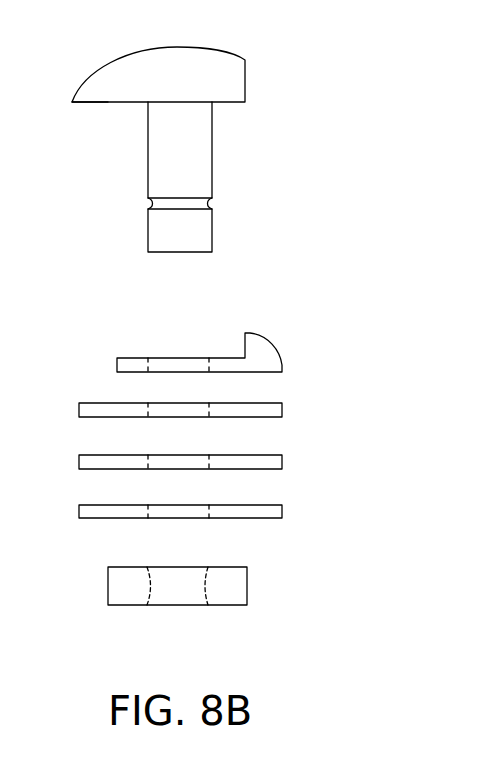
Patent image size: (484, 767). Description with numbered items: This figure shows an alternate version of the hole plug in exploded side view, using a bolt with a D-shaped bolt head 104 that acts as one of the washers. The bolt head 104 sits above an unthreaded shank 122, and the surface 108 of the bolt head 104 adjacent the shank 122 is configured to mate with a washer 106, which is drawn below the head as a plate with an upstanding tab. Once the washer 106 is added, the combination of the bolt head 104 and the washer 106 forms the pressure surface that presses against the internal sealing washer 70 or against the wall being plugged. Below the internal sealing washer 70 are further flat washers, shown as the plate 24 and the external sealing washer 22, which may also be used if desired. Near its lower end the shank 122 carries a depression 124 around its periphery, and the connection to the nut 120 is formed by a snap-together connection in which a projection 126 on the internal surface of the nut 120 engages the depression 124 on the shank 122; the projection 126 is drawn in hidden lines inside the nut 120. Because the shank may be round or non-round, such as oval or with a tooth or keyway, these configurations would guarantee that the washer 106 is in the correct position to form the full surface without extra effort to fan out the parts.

The D-shaped bolt head 104 is at (212, 52).
The surface of the bolt head 108 is at (108, 102).
The depression 124 is at (204, 197).
The shank 122 is at (212, 230).
The washer 106 is at (282, 358).
The internal sealing washer 70 is at (282, 405).
The plate 24 is at (282, 457).
The external sealing washer 22 is at (282, 507).
The nut 120 is at (247, 583).
The projection 126 is at (205, 585).